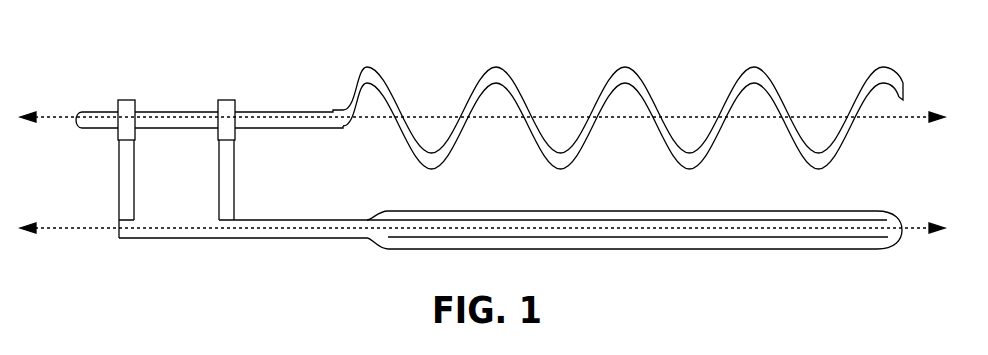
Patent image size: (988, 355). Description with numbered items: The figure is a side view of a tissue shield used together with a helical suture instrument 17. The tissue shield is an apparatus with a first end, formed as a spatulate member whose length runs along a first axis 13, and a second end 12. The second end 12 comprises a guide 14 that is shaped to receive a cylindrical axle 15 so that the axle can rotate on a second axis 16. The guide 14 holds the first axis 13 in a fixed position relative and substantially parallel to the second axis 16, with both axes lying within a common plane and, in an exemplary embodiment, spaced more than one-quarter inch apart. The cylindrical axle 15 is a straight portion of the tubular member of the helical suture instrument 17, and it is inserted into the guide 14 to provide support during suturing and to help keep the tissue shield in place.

The second end 12 is at (318, 223).
The first axis 13 is at (482, 219).
The guide 14 is at (225, 108).
The cylindrical axle 15 is at (316, 122).
The second axis 16 is at (482, 107).
The helical suture instrument 17 is at (625, 75).